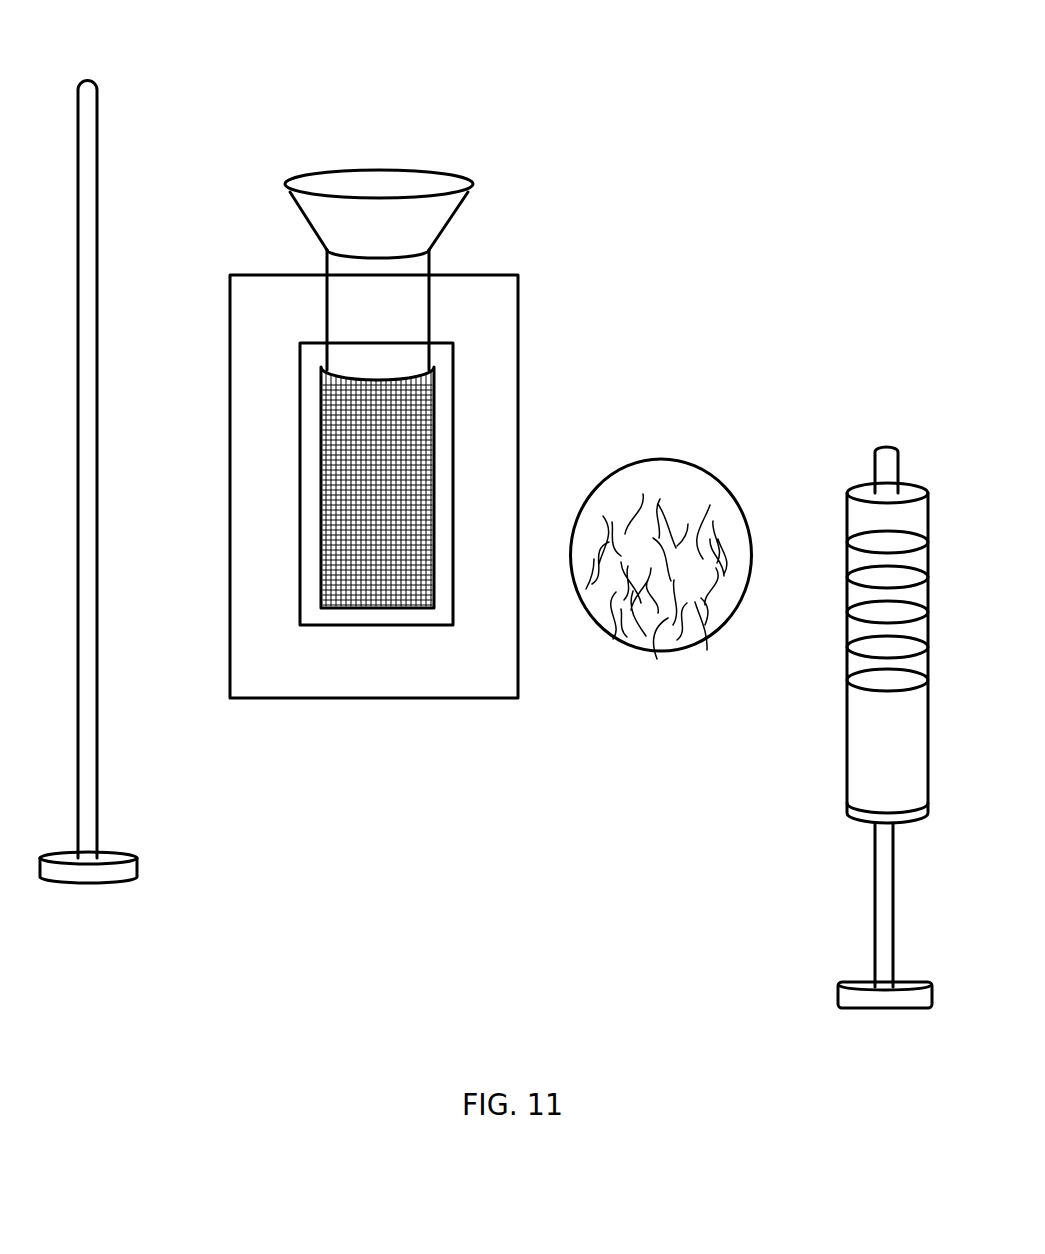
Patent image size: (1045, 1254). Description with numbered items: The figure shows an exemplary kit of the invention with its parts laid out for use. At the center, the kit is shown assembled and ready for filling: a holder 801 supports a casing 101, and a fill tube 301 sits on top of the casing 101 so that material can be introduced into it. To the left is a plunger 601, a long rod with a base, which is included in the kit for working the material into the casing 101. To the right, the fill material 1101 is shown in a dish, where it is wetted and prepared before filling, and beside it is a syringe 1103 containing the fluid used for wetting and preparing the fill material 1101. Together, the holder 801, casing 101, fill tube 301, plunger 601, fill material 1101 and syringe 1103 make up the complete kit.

The casing 101 is at (383, 502).
The fill tube 301 is at (358, 257).
The plunger 601 is at (79, 885).
The holder 801 is at (354, 670).
The fill material 1101 is at (687, 458).
The syringe 1103 is at (880, 417).